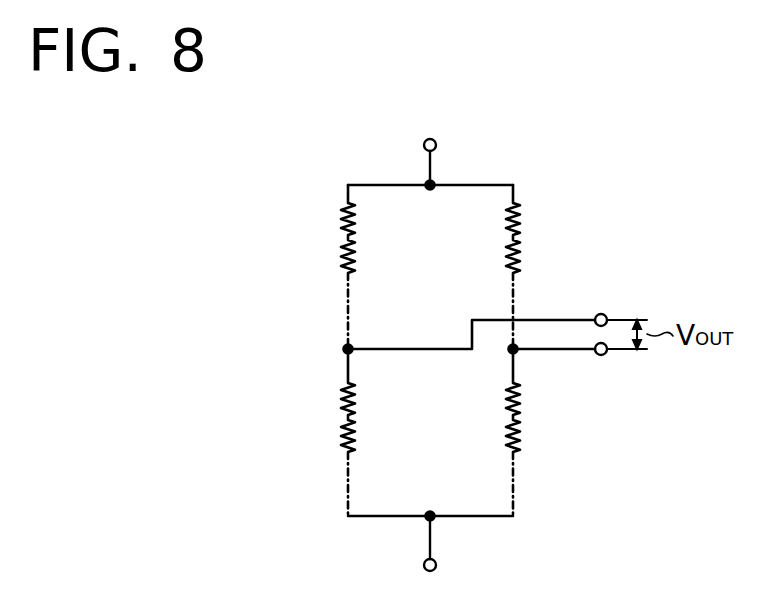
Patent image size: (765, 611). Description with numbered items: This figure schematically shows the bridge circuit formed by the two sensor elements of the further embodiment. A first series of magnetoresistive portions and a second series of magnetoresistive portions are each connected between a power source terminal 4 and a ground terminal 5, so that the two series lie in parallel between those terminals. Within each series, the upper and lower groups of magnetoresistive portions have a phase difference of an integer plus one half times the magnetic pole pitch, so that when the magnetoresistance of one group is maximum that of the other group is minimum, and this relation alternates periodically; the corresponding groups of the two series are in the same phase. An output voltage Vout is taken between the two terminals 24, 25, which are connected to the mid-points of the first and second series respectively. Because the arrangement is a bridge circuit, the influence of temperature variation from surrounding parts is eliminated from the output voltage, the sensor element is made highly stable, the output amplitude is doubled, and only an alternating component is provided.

The power source terminal 4 is at (436, 142).
The ground terminal 5 is at (436, 568).
The terminal 24 is at (606, 316).
The terminal 25 is at (606, 354).